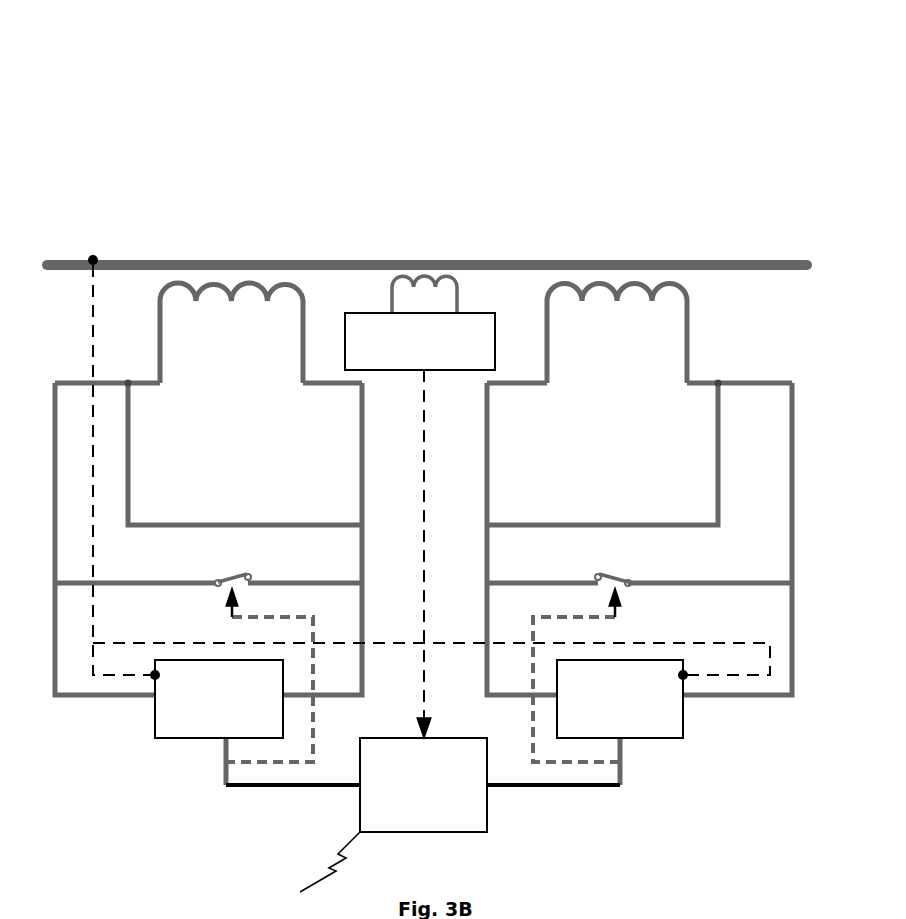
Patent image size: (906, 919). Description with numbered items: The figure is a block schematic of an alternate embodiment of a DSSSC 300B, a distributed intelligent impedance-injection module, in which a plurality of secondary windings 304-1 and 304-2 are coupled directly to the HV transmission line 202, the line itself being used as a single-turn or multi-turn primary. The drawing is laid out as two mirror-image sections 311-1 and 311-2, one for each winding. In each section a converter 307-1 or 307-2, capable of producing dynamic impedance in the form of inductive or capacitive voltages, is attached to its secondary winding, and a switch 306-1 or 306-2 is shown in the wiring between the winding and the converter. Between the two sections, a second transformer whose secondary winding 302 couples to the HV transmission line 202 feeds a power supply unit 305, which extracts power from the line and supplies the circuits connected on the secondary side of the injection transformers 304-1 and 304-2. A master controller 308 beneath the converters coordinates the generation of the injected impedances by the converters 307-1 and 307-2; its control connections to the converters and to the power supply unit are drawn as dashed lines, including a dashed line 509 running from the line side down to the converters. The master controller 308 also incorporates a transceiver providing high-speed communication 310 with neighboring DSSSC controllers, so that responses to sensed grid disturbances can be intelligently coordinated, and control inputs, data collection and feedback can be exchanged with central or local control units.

The DSSSC 300B is at (313, 110).
The HV transmission line 202 is at (472, 259).
The secondary winding of second transformer 302 is at (444, 277).
The power supply unit 305 is at (388, 312).
The control connection line 509 is at (95, 298).
The first circuit section 311-1 is at (218, 186).
The second circuit section 311-2 is at (640, 198).
The secondary winding 304-1 is at (233, 302).
The secondary winding 304-2 is at (615, 302).
The first switch 306-1 is at (240, 572).
The second switch 306-2 is at (605, 572).
The converter 307-1 is at (155, 733).
The converter 307-2 is at (683, 735).
The master controller 308 is at (487, 800).
The high-speed communication 310 is at (330, 863).